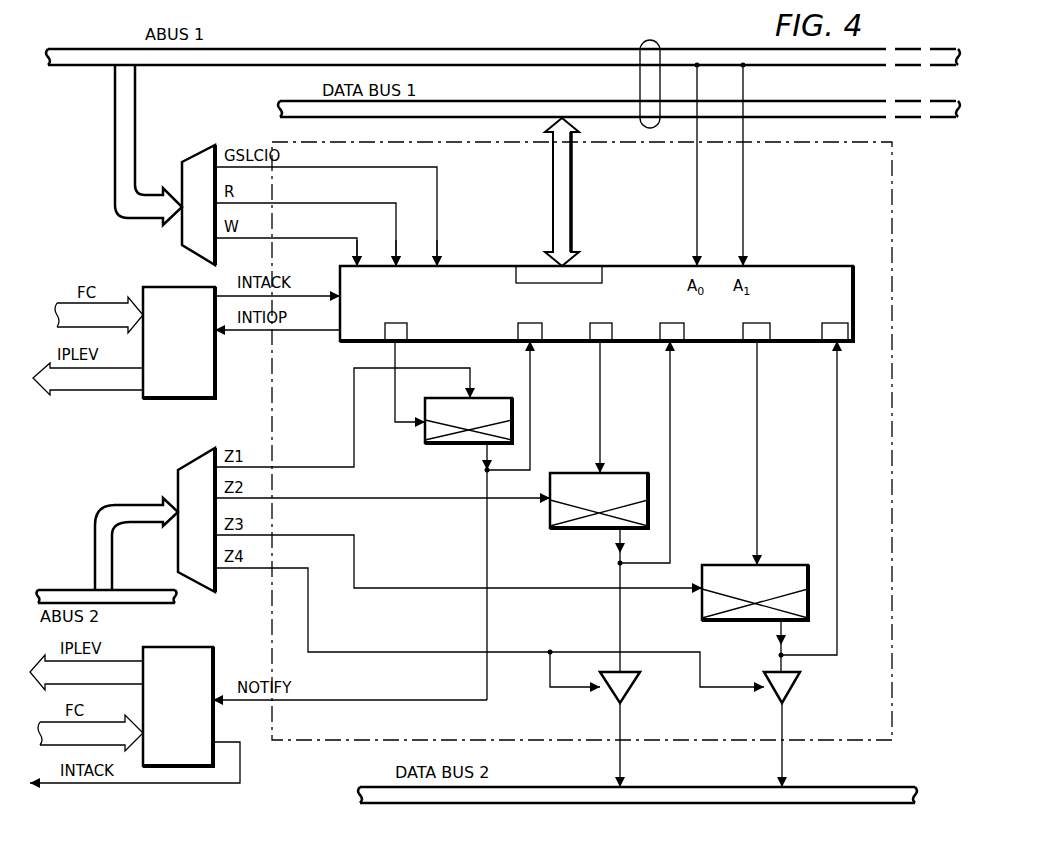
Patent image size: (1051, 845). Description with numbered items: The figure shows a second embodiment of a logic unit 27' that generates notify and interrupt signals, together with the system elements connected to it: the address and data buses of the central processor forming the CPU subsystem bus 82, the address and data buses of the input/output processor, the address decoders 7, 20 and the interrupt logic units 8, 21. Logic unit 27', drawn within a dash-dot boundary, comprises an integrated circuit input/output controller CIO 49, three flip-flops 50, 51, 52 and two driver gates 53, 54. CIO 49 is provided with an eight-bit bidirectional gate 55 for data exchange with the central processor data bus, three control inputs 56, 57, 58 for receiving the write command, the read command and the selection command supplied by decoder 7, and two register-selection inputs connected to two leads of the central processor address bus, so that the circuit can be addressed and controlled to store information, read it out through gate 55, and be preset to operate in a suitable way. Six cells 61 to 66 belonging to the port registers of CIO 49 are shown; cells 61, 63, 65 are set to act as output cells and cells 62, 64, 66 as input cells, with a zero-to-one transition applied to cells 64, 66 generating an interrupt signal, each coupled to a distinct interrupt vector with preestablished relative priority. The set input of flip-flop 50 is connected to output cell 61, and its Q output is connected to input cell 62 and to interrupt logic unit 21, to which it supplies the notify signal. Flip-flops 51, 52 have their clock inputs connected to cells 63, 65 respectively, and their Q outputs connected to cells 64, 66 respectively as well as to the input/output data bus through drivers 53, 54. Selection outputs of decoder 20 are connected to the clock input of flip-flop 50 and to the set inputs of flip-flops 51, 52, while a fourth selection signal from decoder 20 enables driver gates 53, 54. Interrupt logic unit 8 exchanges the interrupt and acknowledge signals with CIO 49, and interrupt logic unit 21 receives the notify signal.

The decoder 7 is at (182, 234).
The interrupt logic unit 8 is at (173, 287).
The decoder 20 is at (192, 458).
The interrupt logic unit 21 is at (174, 646).
The logic unit 27' is at (557, 441).
The input/output controller CIO 49 is at (776, 266).
The flip-flop 50 is at (512, 398).
The flip-flop 51 is at (644, 473).
The flip-flop 52 is at (777, 565).
The driver gate 53 is at (634, 682).
The driver gate 54 is at (797, 682).
The input/output bidirectional gate 55 is at (602, 273).
The control input 56 is at (357, 268).
The control input 57 is at (396, 268).
The control input 58 is at (437, 268).
The cell 61 is at (407, 328).
The cell 62 is at (530, 324).
The cell 63 is at (612, 325).
The cell 64 is at (684, 325).
The cell 65 is at (758, 323).
The cell 66 is at (846, 313).
The subsystem bus 82 is at (650, 40).